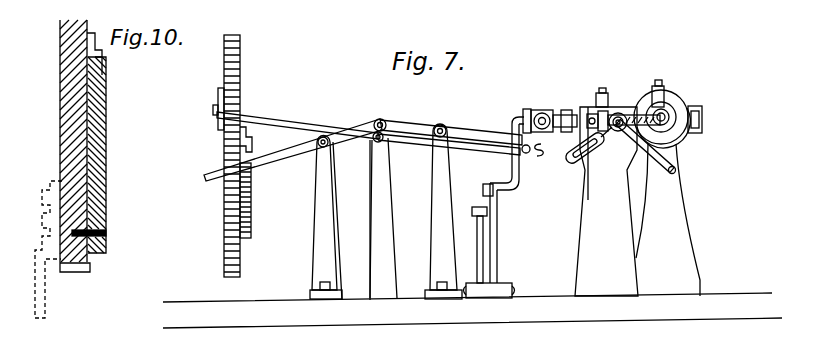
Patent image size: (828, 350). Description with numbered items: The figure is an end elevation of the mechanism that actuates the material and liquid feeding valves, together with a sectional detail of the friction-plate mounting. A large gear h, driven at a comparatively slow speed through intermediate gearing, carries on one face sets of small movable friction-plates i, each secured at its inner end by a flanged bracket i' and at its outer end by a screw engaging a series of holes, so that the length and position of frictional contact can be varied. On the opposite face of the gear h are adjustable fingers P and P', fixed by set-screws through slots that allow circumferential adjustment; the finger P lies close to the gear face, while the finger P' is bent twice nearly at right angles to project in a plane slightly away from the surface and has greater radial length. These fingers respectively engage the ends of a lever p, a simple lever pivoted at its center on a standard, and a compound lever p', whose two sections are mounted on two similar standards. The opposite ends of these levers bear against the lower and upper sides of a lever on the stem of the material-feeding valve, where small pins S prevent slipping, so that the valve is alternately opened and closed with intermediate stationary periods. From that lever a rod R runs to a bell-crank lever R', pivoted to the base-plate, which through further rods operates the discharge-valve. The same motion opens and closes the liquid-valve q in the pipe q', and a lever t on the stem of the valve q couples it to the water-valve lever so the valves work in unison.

In FIG. 10, the large gear h is at (62, 103).
In FIG. 7, the large gear h is at (241, 80).
In FIG. 10, the friction-plate i is at (104, 155).
In FIG. 7, the friction-plate i is at (252, 200).
In FIG. 10, the flanged bracket i' is at (106, 54).
In FIG. 7, the flanged bracket i' is at (253, 139).
In FIG. 10, the finger P' is at (54, 249).
In FIG. 7, the finger P is at (203, 107).
In FIG. 7, the lever p is at (297, 115).
In FIG. 7, the compound lever p' is at (367, 154).
In FIG. 7, the rod R is at (473, 245).
In FIG. 7, the bell-crank lever R' is at (500, 233).
In FIG. 7, the bearing a is at (554, 110).
In FIG. 7, the pin S is at (536, 157).
In FIG. 7, the pipe q' is at (606, 111).
In FIG. 7, the liquid-valve q is at (642, 125).
In FIG. 7, the lever t is at (680, 152).